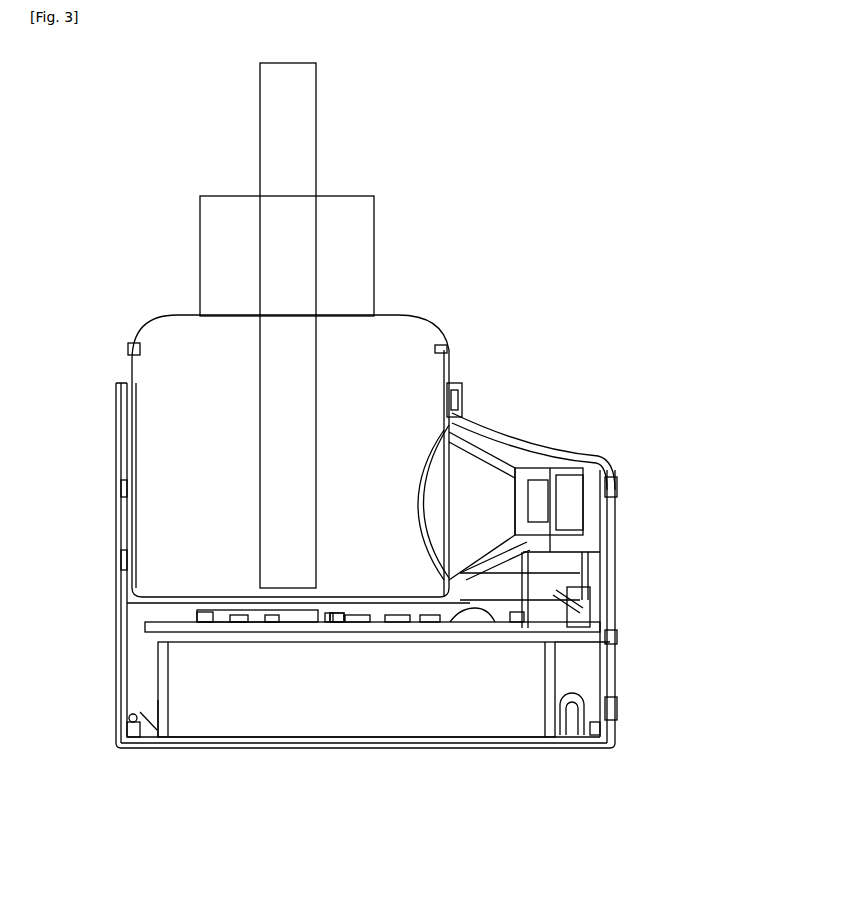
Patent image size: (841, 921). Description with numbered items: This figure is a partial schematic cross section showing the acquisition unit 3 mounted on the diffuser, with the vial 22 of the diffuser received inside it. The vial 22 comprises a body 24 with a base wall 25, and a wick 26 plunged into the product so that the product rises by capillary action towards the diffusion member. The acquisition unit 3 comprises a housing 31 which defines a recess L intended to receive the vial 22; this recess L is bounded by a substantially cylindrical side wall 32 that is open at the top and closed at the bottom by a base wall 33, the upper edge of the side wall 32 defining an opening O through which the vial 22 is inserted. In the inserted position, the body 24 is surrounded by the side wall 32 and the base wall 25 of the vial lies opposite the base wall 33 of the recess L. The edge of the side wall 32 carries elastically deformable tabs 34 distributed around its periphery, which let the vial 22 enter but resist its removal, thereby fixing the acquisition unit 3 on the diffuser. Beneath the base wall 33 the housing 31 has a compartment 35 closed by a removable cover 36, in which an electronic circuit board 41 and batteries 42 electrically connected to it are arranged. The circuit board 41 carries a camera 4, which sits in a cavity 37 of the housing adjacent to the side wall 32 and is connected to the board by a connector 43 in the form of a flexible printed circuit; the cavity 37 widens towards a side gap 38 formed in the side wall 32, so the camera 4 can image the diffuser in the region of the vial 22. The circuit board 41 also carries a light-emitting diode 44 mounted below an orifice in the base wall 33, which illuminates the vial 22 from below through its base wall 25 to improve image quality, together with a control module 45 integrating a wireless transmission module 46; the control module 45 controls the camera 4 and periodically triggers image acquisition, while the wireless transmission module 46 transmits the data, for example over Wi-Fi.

The acquisition unit 3 is at (672, 568).
The camera 4 is at (572, 492).
The vial 22 is at (411, 314).
The body 24 is at (214, 441).
The base wall 25 is at (300, 493).
The wick 26 is at (200, 608).
The housing 31 is at (575, 462).
The side wall 32 is at (116, 505).
The base wall 33 is at (116, 600).
The elastically deformable tabs 34 is at (450, 368).
The compartment 35 is at (131, 745).
The removable cover 36 is at (163, 745).
The cavity 37 is at (528, 476).
The side gap 38 is at (432, 497).
The electronic circuit board 41 is at (585, 638).
The batteries 42 is at (418, 695).
The connector 43 is at (607, 540).
The light-emitting diode 44 is at (345, 645).
The control module 45 is at (217, 625).
The wireless transmission module 46 is at (337, 617).
The opening O is at (178, 341).
The recess L is at (156, 469).